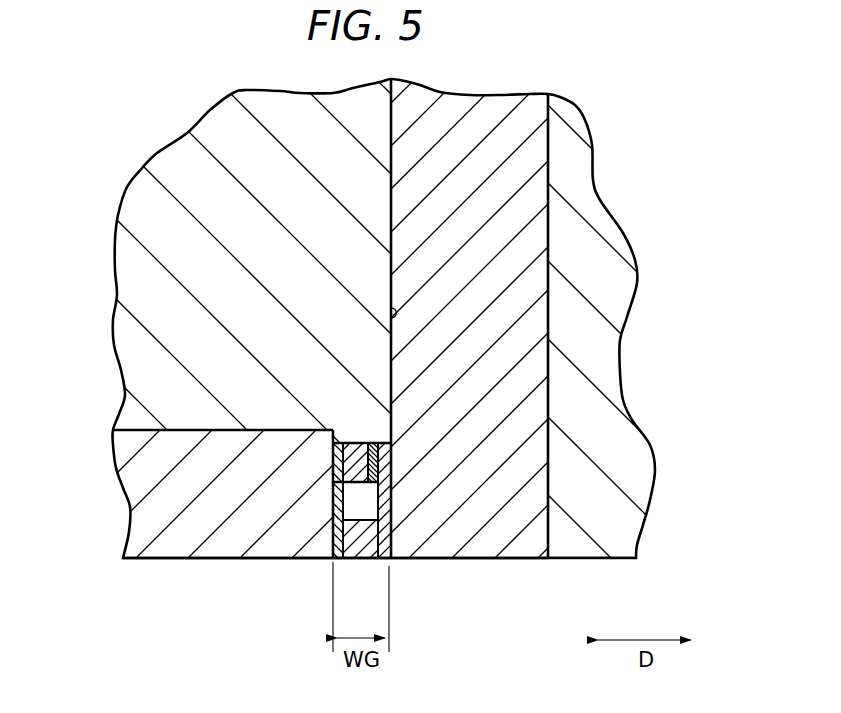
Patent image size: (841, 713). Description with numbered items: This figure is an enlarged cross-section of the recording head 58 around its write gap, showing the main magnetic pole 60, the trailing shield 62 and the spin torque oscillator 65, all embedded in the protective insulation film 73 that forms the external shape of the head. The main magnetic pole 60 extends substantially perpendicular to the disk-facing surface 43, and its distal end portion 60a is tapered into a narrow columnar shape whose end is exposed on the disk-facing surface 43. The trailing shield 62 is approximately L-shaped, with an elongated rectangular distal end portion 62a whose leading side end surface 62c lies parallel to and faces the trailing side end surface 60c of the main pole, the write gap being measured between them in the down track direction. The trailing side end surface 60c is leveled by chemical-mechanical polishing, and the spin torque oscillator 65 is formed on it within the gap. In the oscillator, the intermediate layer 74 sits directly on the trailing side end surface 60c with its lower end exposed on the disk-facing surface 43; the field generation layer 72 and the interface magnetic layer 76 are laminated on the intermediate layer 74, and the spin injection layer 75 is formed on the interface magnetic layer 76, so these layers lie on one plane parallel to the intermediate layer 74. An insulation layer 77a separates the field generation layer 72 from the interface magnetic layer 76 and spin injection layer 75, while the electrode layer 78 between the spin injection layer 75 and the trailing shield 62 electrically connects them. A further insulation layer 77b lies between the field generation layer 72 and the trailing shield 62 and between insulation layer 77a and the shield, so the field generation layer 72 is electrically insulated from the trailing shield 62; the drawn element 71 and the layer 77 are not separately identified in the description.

The recording head 58 is at (109, 241).
The protective insulation film 73 is at (177, 163).
The wall portion 77 is at (357, 255).
The insulation layer 77a is at (362, 495).
The insulation layer 77b is at (333, 576).
The boundary portion 71 is at (391, 316).
The main magnetic pole 60 is at (530, 230).
The distal end portion of main magnetic pole 60a is at (512, 558).
The trailing side end surface of main magnetic pole 60c is at (387, 523).
The trailing shield 62 is at (160, 428).
The distal end portion of trailing shield 62a is at (189, 543).
The leading side end surface 62c is at (336, 537).
The spin torque oscillator 65 is at (318, 505).
The field generation layer 72 is at (362, 550).
The intermediate layer 74 is at (383, 510).
The spin injection layer 75 is at (352, 450).
The interface magnetic layer 76 is at (377, 443).
The electrode layer 78 is at (340, 458).
The disk-facing surface (ABS) 43 is at (610, 558).